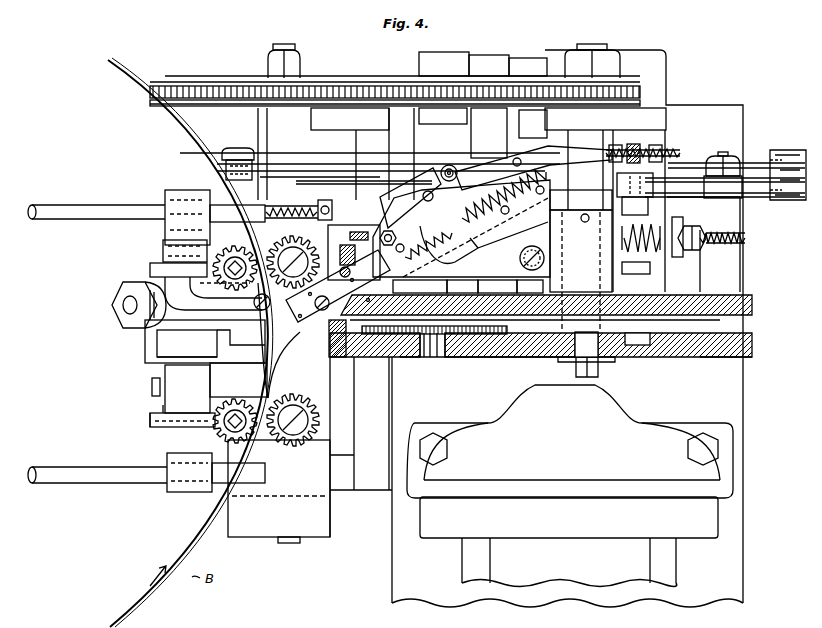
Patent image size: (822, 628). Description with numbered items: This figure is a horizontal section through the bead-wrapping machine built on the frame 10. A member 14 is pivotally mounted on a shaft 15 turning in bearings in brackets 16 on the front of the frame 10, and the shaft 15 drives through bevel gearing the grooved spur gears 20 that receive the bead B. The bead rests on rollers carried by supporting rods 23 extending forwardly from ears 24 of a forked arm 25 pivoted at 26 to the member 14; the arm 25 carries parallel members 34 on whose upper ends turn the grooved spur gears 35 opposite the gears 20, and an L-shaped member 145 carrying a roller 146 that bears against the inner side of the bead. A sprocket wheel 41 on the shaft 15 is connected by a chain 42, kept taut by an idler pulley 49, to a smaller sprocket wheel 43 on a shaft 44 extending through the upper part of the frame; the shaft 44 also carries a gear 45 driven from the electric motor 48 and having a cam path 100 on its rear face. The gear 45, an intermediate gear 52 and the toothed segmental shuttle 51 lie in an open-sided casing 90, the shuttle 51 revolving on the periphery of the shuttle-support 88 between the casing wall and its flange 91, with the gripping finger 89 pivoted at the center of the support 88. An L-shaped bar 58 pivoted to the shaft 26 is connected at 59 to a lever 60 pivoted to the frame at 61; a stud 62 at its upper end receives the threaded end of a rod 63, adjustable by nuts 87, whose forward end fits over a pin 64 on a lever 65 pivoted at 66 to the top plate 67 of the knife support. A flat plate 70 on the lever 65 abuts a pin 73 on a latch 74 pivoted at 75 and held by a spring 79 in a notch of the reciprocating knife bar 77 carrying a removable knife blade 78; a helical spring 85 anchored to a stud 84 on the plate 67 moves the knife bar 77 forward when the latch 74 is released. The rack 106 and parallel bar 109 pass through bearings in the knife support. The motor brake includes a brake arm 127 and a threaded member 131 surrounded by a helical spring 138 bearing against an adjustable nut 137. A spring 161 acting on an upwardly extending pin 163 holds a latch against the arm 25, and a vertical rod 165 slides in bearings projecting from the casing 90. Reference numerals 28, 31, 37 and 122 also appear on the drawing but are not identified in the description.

The frame 10 is at (397, 566).
The member 14 is at (262, 538).
The shaft 15 is at (280, 50).
The brackets 16 is at (330, 130).
The spur gears 20 is at (288, 447).
The supporting rods 23 is at (66, 206).
The ears 24 is at (180, 186).
The forked arm 25 is at (150, 270).
The pivot shaft 26 is at (222, 193).
The bracket 28 is at (152, 408).
The hex nut 31 is at (122, 283).
The parallel members 34 is at (163, 240).
The spur gears 35 is at (212, 262).
The bracket 37 is at (156, 380).
The sprocket wheel 41 is at (235, 82).
The chain 42 is at (418, 76).
The smaller sprocket wheel 43 is at (626, 78).
The shaft 44 is at (588, 50).
The gear 45 is at (707, 358).
The electric motor 48 is at (636, 425).
The idler pulley 49 is at (455, 58).
The segmental shuttle 51 is at (157, 355).
The intermediate gear 52 is at (436, 358).
The L-shaped bar 58 is at (236, 158).
The pivotal connection 59 is at (790, 152).
The lever 60 is at (655, 202).
The pivot 61 is at (730, 151).
The pivoted stud 62 is at (637, 142).
The rod 63 is at (681, 152).
The pin 64 is at (450, 165).
The lever 65 is at (500, 243).
The pivot 66 is at (546, 262).
The top plate 67 is at (552, 236).
The flat plate 70 is at (418, 211).
The pin 73 is at (428, 191).
The latch 74 is at (510, 168).
The pivot 75 is at (390, 246).
The knife bar 77 is at (340, 358).
The knife blade 78 is at (290, 362).
The spring 79 is at (478, 168).
The stud 84 is at (424, 256).
The helical spring 85 is at (512, 203).
The nuts 87 is at (618, 144).
The shuttle-support 88 is at (250, 342).
The gripping finger 89 is at (285, 356).
The casing 90 is at (753, 302).
The flange 91 is at (354, 360).
The cam path 100 is at (752, 325).
The rack 106 is at (355, 255).
The parallel bar 109 is at (354, 252).
The rod 122 is at (362, 181).
The brake arm 127 is at (740, 233).
The threaded member 131 is at (746, 238).
The adjustable nut 137 is at (692, 250).
The helical spring 138 is at (655, 272).
The L-shaped member 145 is at (175, 296).
The roller 146 is at (254, 302).
The spring 161 is at (284, 206).
The pin 163 is at (318, 206).
The vertical rod 165 is at (330, 288).